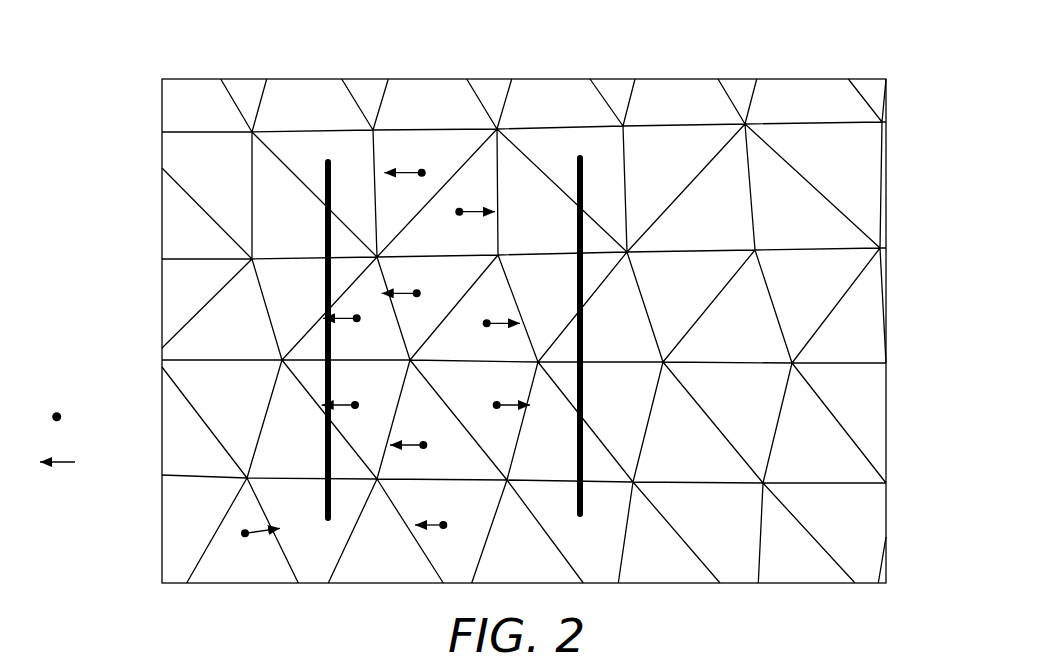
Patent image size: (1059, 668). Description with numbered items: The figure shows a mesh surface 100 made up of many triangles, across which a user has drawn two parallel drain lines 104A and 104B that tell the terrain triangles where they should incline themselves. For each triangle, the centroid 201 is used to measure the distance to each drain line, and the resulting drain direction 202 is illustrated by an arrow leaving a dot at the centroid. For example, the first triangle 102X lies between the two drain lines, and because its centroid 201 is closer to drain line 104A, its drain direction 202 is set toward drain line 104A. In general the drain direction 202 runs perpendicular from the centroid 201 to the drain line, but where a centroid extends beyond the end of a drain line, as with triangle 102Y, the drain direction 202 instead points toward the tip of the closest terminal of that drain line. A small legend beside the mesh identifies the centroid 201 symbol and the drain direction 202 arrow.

The mesh surface 100 is at (162, 243).
The drain line 104A is at (324, 345).
The drain line 104B is at (583, 186).
The first triangle 102X is at (418, 282).
The triangle 102Y is at (249, 546).
The centroid 201 is at (78, 419).
The drain direction 202 is at (72, 475).